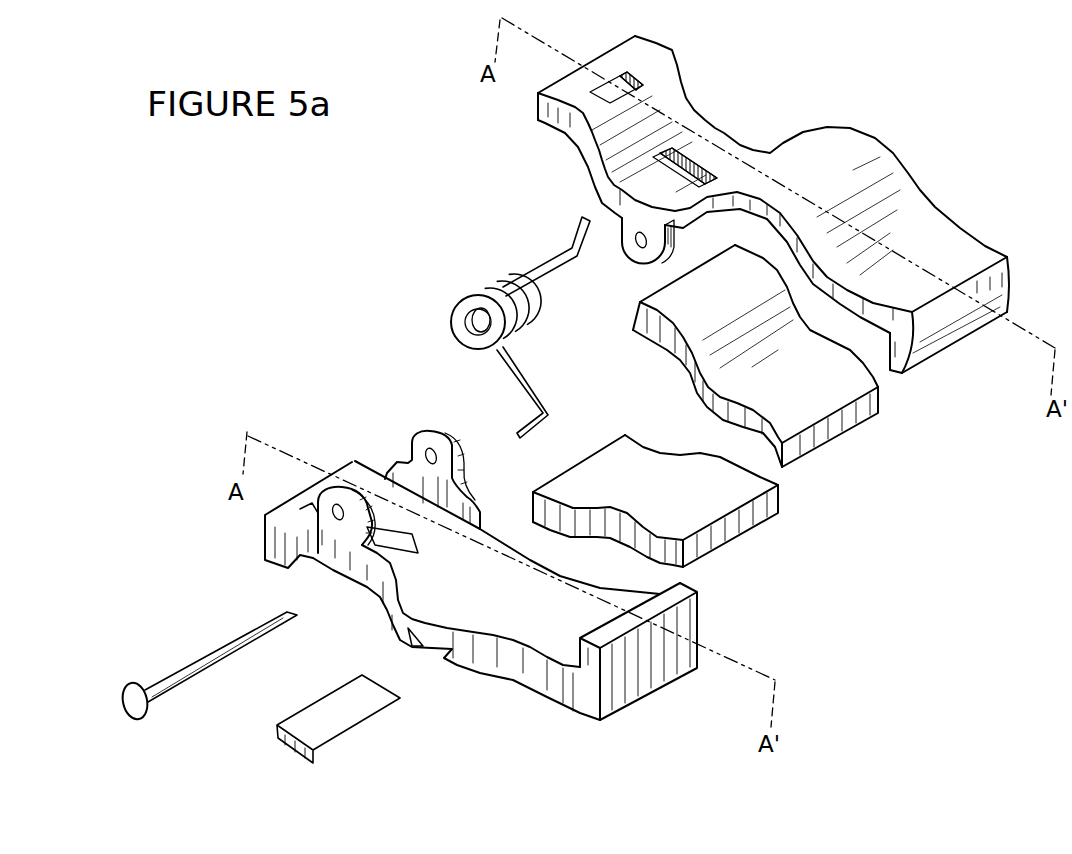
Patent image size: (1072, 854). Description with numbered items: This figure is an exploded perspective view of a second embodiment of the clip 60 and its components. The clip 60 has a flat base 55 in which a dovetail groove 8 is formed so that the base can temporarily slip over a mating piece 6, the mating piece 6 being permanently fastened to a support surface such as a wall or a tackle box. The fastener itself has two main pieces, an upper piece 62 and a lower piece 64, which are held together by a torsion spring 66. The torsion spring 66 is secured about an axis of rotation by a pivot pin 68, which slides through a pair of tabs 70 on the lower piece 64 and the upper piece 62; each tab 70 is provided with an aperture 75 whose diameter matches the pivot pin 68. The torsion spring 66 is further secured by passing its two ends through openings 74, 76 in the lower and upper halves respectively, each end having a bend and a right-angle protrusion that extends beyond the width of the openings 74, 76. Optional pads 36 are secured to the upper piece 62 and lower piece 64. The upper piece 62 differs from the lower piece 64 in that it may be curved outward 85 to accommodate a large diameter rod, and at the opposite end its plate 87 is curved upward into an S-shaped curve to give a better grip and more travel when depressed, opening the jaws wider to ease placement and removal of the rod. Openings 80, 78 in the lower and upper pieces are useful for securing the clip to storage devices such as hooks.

The clip 60 is at (971, 118).
The outward curve 85 is at (848, 147).
The upper piece 62 is at (970, 250).
The plate 87 is at (543, 133).
The opening 78 is at (628, 73).
The opening 76 is at (693, 172).
The aperture 75 is at (644, 254).
The torsion spring 66 is at (453, 288).
The pads 36 is at (843, 437).
The opening 80 is at (352, 462).
The tabs 70 is at (423, 447).
The opening 74 is at (396, 594).
The flat base 55 is at (543, 690).
The dovetail groove 8 is at (433, 652).
The lower piece 64 is at (670, 637).
The pivot pin 68 is at (144, 728).
The mating piece 6 is at (347, 733).